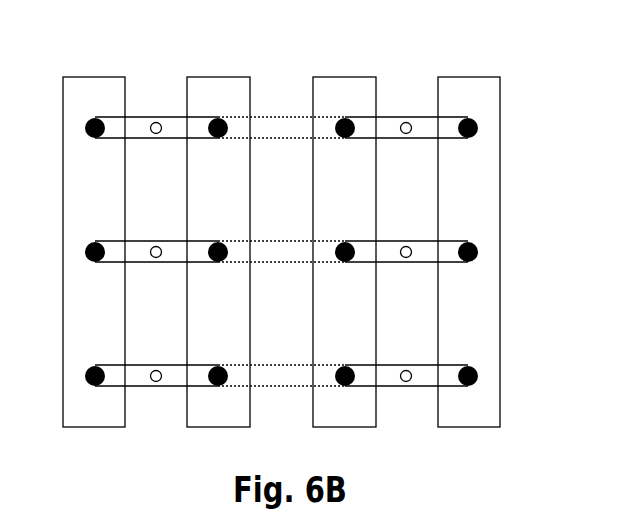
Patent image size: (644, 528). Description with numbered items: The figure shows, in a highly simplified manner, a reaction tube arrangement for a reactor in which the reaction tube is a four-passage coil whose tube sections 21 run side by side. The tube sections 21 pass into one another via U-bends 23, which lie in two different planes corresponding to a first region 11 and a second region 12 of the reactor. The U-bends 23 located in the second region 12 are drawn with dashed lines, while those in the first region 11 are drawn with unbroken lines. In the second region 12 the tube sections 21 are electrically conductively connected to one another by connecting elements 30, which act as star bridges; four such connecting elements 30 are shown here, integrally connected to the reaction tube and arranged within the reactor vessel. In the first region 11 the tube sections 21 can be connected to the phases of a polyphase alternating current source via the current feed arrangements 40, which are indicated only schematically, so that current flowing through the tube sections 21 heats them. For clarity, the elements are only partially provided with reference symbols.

The connecting element 30 is at (88, 89).
The first region 11 is at (146, 86).
The second region 12 is at (270, 86).
The tube section 21 is at (86, 123).
The U-bend 23 is at (117, 131).
The current feed arrangement 40 is at (158, 134).